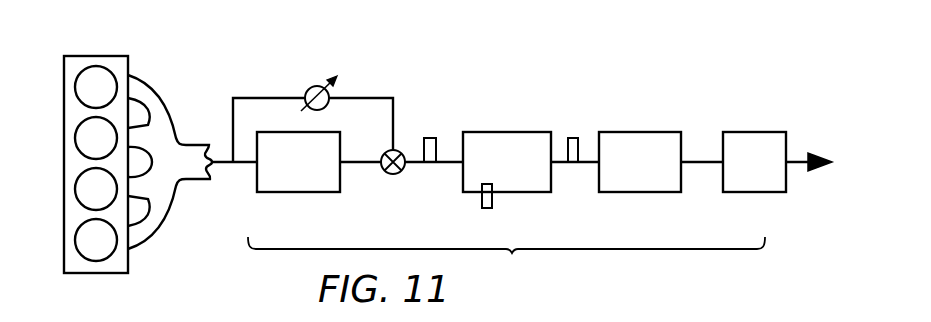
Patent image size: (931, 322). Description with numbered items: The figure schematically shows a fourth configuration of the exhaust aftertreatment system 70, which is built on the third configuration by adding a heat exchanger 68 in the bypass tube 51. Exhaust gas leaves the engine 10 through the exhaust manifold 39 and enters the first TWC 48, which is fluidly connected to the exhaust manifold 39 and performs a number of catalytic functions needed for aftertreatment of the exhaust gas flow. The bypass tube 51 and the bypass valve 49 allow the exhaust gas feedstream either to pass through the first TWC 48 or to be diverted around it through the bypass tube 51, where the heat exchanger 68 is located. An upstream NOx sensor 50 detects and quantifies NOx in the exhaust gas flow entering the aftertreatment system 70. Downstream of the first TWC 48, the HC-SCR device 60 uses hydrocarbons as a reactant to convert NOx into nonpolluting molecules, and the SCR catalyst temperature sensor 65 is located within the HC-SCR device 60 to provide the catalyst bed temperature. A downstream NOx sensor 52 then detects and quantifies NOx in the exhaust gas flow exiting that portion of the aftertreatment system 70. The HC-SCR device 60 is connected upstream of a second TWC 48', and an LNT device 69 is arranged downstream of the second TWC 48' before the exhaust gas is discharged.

The engine 10 is at (63, 97).
The exhaust manifold 39 is at (163, 108).
The first TWC 48 is at (313, 184).
The second TWC 48' is at (653, 133).
The bypass valve 49 is at (397, 174).
The upstream NOx sensor 50 is at (443, 148).
The bypass tube 51 is at (377, 96).
The downstream NOx sensor 52 is at (580, 153).
The HC-SCR device 60 is at (522, 140).
The SCR catalyst temperature sensor 65 is at (491, 199).
The heat exchanger 68 is at (315, 74).
The LNT device 69 is at (742, 140).
The exhaust aftertreatment system 70 is at (512, 253).